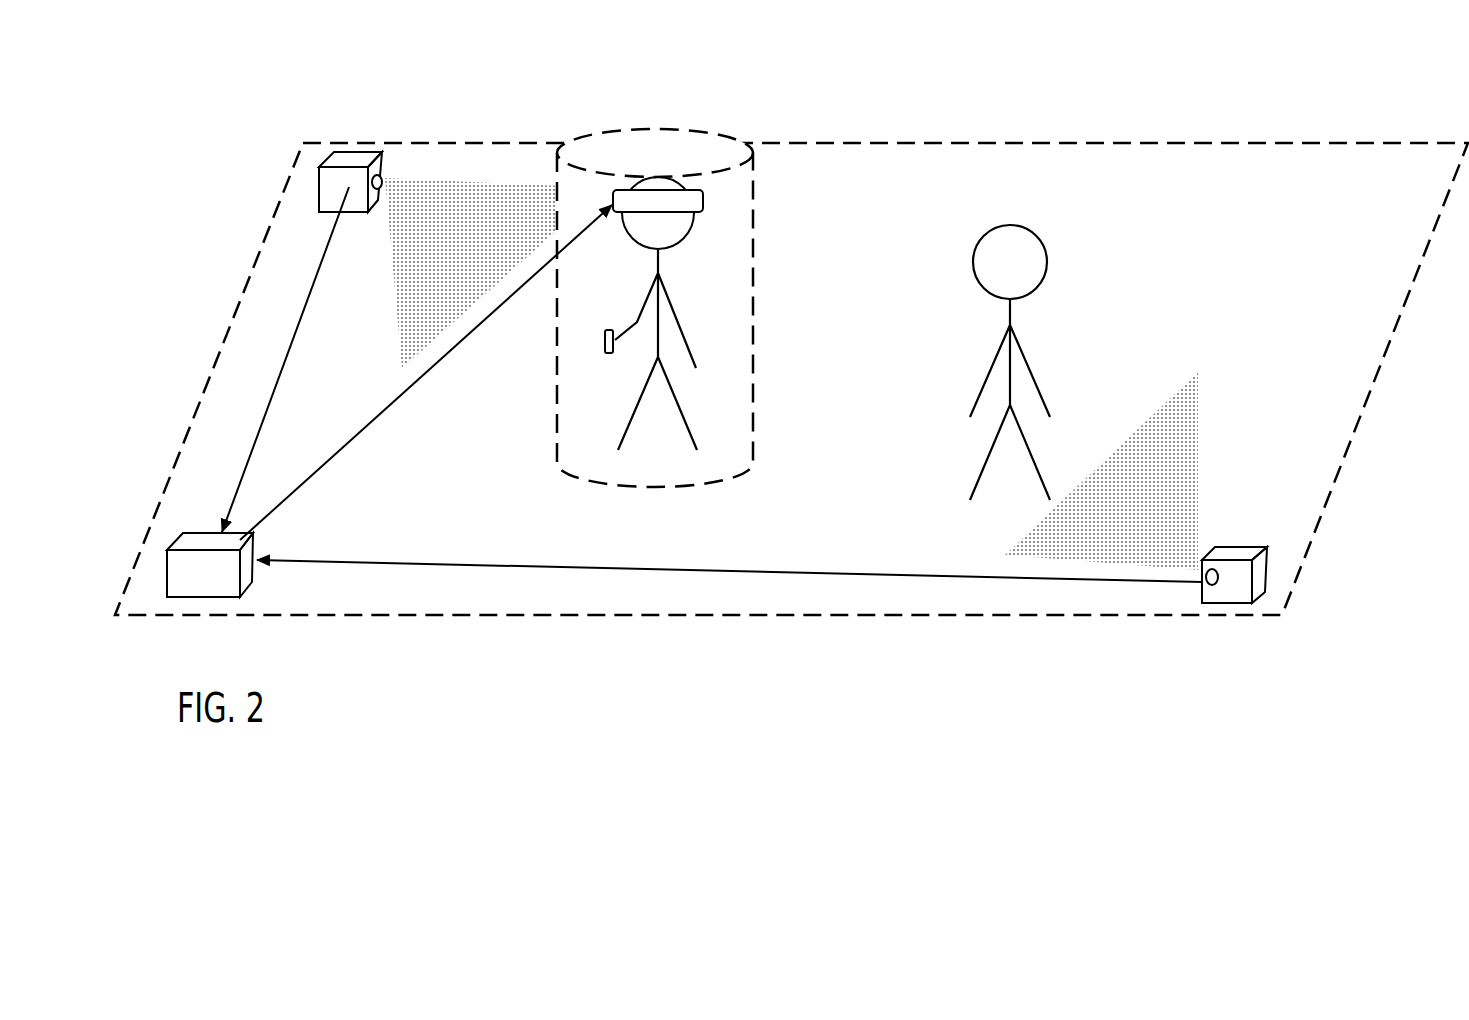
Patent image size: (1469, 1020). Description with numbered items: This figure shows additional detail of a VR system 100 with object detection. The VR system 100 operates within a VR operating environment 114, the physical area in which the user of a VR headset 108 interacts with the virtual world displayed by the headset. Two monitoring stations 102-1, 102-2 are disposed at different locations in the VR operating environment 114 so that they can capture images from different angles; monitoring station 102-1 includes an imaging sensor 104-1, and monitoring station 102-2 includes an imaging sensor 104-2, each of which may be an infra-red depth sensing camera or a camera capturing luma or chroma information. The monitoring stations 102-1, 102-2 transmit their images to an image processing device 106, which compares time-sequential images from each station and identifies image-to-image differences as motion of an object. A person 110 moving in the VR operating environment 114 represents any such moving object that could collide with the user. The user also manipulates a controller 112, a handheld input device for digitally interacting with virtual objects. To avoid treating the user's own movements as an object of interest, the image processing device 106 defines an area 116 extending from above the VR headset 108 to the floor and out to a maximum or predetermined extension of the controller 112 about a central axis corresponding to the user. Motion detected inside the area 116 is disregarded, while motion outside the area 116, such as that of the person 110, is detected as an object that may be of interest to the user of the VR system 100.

The VR system 100 is at (787, 102).
The monitoring station 102-1 is at (319, 188).
The monitoring station 102-2 is at (1268, 568).
The imaging sensor 104-1 is at (383, 180).
The imaging sensor 104-2 is at (1213, 568).
The image processing device 106 is at (167, 562).
The VR headset 108 is at (703, 212).
The person 110 is at (1060, 275).
The controller 112 is at (608, 330).
The VR operating environment 114 is at (245, 303).
The area 116 is at (757, 327).